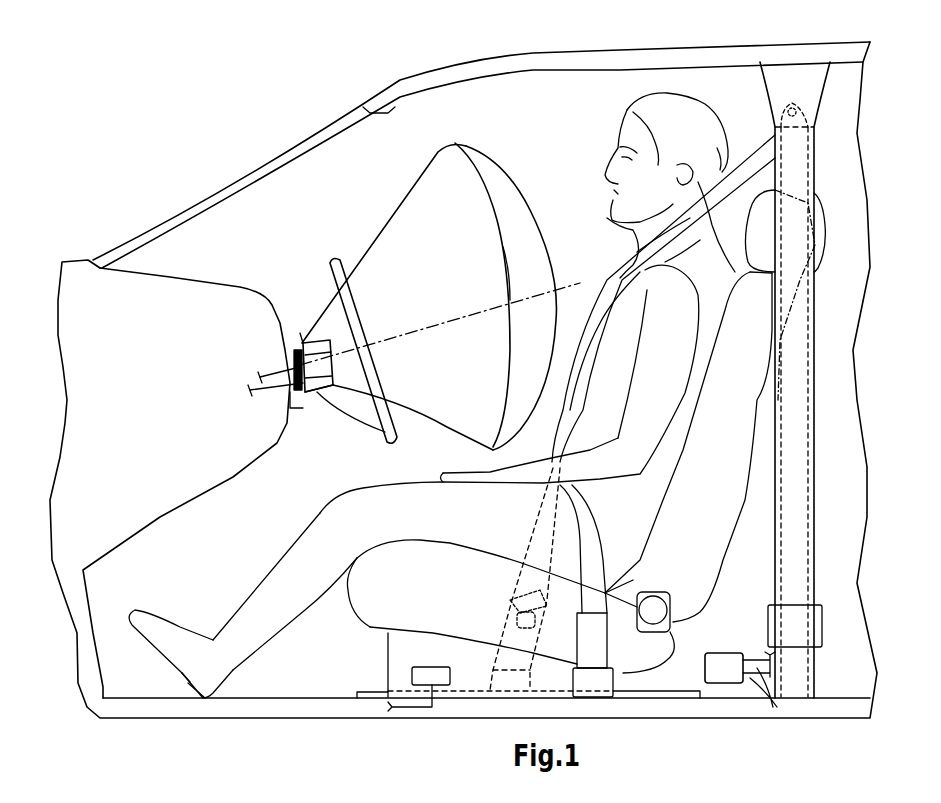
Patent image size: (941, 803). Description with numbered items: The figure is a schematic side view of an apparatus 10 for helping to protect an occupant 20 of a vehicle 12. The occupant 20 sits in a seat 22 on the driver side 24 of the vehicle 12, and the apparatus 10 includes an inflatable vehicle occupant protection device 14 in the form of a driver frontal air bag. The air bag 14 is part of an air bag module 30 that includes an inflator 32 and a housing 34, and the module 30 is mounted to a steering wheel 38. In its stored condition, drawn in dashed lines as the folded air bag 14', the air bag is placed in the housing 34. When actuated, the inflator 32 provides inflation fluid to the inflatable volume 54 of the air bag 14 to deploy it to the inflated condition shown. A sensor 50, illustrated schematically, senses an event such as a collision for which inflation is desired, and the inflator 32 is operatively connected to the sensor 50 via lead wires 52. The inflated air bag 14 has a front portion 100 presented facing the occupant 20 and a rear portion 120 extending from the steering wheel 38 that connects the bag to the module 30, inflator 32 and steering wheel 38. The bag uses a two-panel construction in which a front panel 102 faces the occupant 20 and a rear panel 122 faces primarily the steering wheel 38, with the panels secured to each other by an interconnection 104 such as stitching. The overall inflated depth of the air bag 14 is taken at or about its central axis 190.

The apparatus 10 is at (290, 177).
The vehicle 12 is at (297, 88).
The inflatable vehicle occupant protection device 14 is at (397, 295).
The air bag in stored condition 14' is at (267, 298).
The occupant 20 is at (600, 117).
The seat 22 is at (723, 423).
The driver side 24 is at (497, 120).
The air bag module 30 is at (327, 317).
The inflator 32 is at (313, 394).
The housing 34 is at (333, 388).
The steering wheel 38 is at (330, 262).
The sensor 50 is at (720, 675).
The lead wires 52 is at (277, 383).
The inflatable volume 54 is at (469, 373).
The front portion 100 is at (493, 177).
The front panel 102 is at (530, 207).
The interconnection 104 is at (510, 275).
The rear portion 120 is at (435, 250).
The rear panel 122 is at (383, 240).
The central axis 190 is at (436, 327).